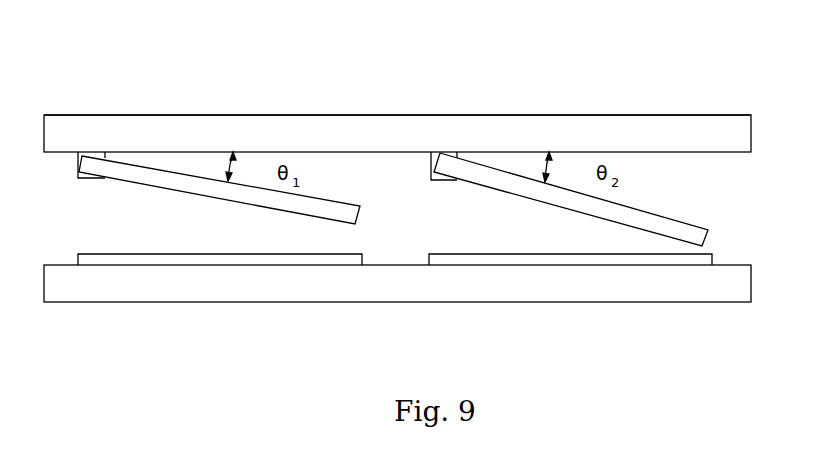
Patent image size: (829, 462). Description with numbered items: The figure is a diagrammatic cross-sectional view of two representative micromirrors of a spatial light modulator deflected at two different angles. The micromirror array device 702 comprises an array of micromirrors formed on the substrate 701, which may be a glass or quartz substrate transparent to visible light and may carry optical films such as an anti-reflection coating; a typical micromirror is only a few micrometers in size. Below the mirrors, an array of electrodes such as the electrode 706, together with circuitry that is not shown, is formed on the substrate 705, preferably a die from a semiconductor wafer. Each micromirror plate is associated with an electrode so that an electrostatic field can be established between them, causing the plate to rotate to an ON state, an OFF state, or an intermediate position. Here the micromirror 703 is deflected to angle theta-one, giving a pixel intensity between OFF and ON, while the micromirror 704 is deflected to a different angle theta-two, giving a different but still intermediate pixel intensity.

The substrate 701 is at (146, 132).
The micromirror array device 702 is at (255, 104).
The micromirror 703 is at (352, 196).
The micromirror 704 is at (629, 198).
The substrate 705 is at (146, 283).
The electrode 706 is at (219, 264).